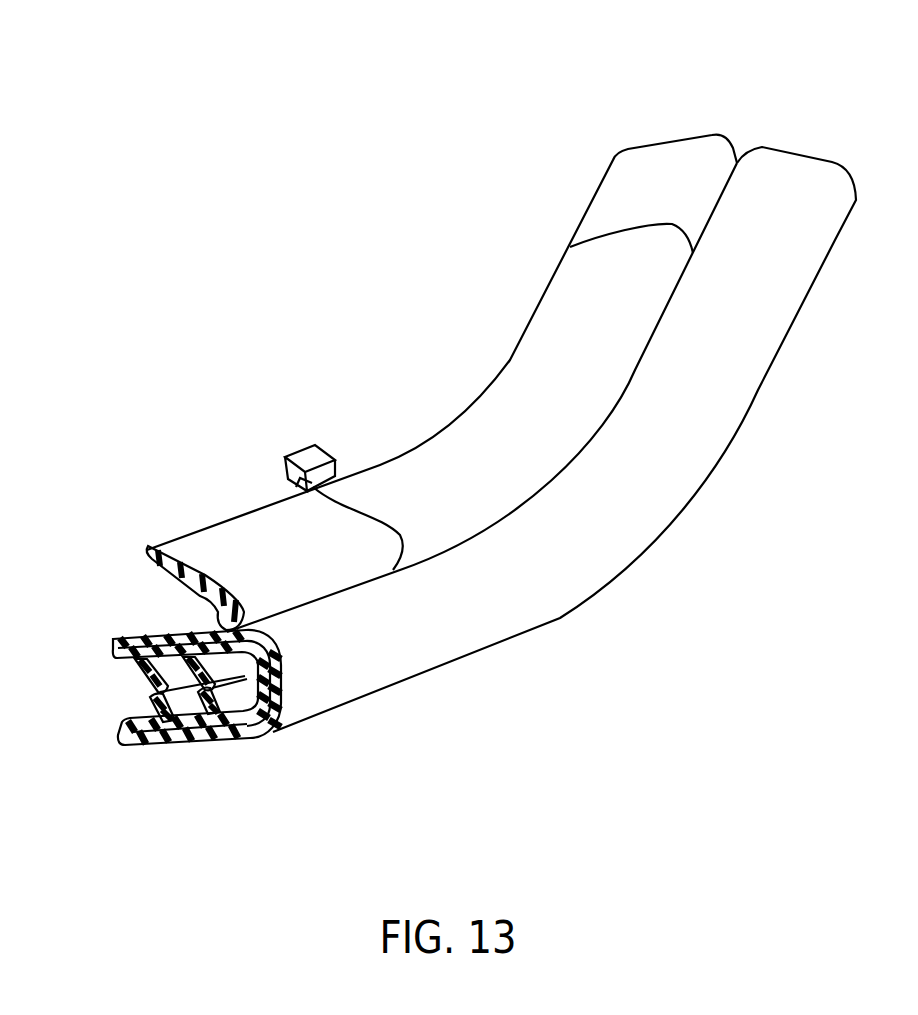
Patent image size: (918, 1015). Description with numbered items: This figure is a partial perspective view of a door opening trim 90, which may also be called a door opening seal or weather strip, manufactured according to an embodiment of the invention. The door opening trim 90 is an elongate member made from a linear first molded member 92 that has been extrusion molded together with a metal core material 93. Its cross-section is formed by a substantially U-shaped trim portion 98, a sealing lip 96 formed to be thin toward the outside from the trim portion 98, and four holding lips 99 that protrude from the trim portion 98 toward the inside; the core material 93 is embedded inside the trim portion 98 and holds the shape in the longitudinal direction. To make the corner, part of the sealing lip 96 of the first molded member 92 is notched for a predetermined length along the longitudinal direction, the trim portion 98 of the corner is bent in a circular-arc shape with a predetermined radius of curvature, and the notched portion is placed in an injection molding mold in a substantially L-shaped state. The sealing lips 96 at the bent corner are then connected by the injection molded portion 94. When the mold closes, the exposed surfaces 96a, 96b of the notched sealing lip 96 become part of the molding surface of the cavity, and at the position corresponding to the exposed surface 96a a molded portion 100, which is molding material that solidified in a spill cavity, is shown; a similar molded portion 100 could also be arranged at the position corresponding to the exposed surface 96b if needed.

The door opening trim 90 is at (826, 116).
The first molded member 92 is at (350, 663).
The core material 93 is at (190, 728).
The injection molded portion 94 is at (528, 367).
The sealing lip 96 is at (147, 557).
The exposed surface 96a is at (295, 507).
The exposed surface 96b is at (570, 247).
The trim portion 98 is at (125, 742).
The holding lips 99 is at (155, 703).
The molded portion 100 is at (310, 457).